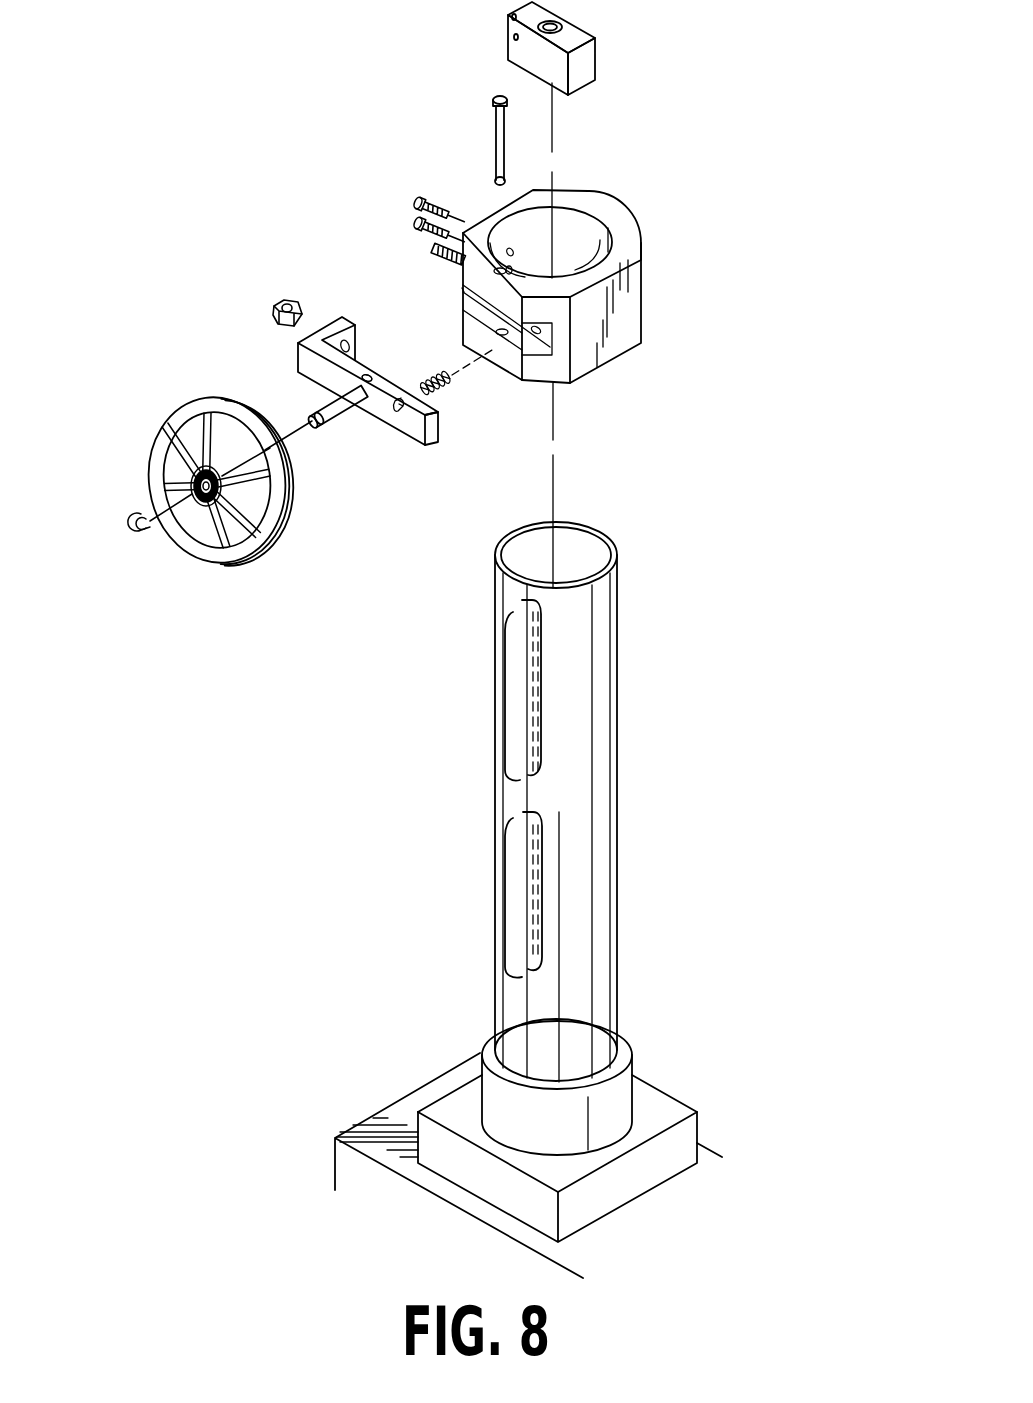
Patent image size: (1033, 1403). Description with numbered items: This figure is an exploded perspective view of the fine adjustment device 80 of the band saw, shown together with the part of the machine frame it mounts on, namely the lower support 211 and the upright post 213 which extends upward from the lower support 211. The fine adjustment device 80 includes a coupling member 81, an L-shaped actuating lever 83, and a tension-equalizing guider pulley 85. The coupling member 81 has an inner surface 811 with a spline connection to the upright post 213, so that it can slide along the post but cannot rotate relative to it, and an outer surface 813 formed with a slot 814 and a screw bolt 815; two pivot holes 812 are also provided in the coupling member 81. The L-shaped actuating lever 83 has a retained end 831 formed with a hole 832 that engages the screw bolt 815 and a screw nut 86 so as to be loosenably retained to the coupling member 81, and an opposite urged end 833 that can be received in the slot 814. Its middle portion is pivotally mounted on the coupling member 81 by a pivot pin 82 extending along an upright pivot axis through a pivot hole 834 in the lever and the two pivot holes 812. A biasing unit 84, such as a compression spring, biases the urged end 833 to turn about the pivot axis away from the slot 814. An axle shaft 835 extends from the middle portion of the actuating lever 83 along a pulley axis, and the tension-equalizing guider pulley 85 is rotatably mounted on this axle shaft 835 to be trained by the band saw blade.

The fine adjustment device 80 is at (633, 206).
The coupling member 81 is at (642, 232).
The inner surface 811 is at (565, 217).
The pivot holes 812 is at (462, 288).
The outer surface 813 is at (563, 378).
The slot 814 is at (556, 336).
The screw bolt 815 is at (433, 258).
The pivot pin 82 is at (495, 131).
The L-shaped actuating lever 83 is at (404, 432).
The retained end 831 is at (335, 327).
The hole 832 is at (360, 340).
The urged end 833 is at (400, 428).
The pivot hole 834 is at (377, 402).
The axle shaft 835 is at (305, 410).
The biasing unit 84 is at (457, 398).
The tension-equalizing guider pulley 85 is at (222, 560).
The screw nut 86 is at (272, 310).
The upright post 213 is at (615, 812).
The lower support 211 is at (335, 1170).